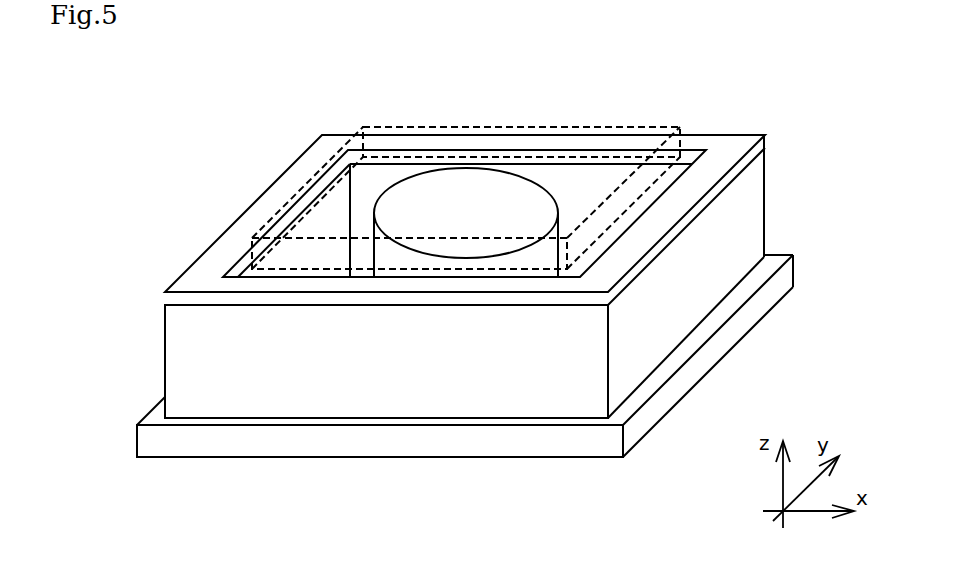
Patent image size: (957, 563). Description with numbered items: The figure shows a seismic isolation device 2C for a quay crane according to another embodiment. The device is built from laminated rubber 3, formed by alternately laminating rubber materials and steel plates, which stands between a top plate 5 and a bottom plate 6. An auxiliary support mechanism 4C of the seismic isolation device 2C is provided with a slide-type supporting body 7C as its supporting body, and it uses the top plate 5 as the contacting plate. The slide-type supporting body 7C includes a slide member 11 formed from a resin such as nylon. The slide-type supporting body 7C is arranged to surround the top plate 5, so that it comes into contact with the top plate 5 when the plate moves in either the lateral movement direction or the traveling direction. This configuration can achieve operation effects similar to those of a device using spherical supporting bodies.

The seismic isolation device 2C is at (165, 128).
The auxiliary support mechanism 4C is at (768, 103).
The slide-type supporting body 7C is at (177, 343).
The slide member 11 is at (203, 252).
The laminated rubber 3 is at (481, 222).
The top plate 5 is at (412, 128).
The bottom plate 6 is at (142, 443).